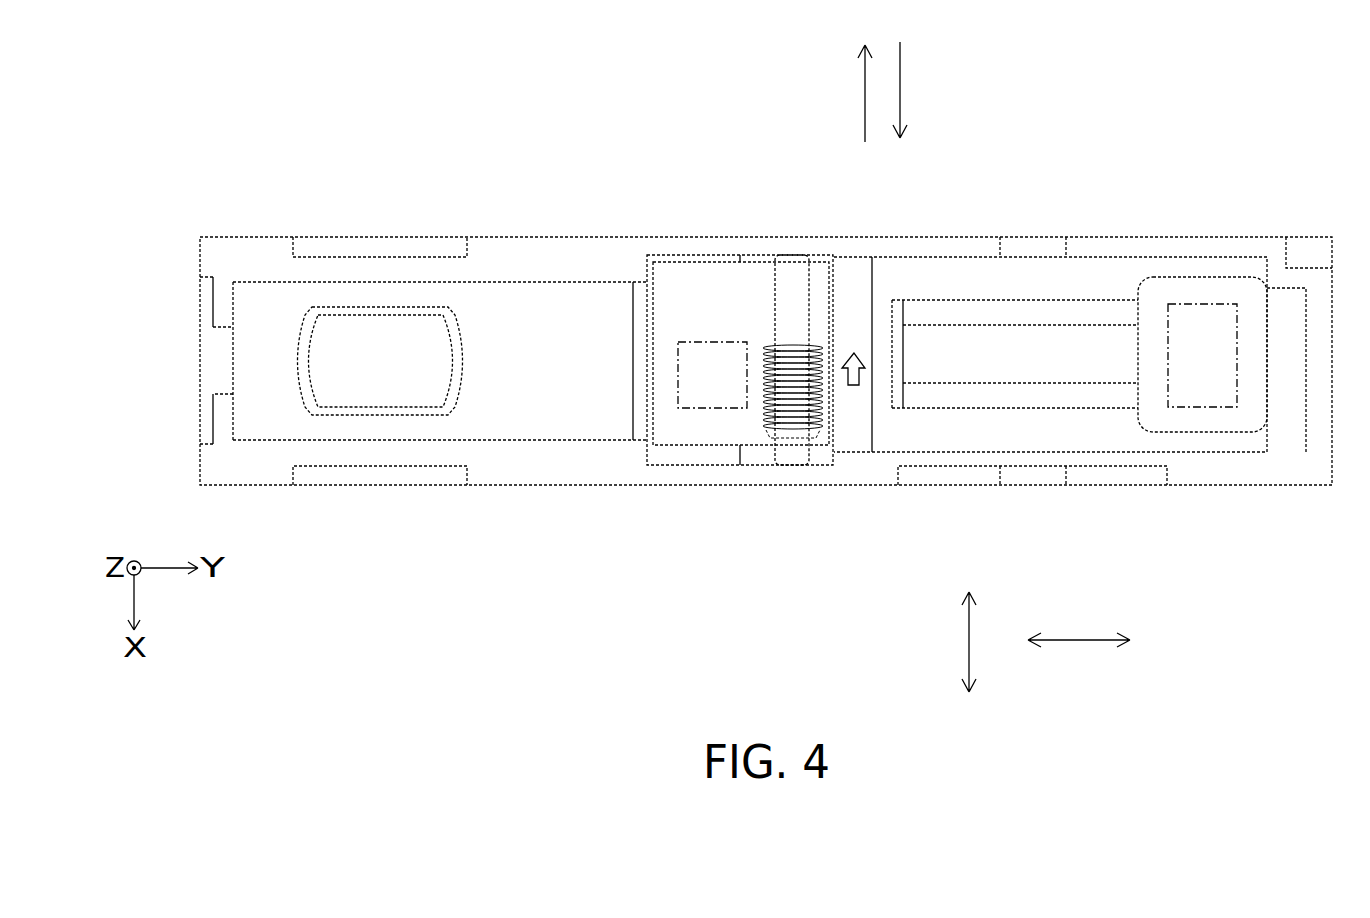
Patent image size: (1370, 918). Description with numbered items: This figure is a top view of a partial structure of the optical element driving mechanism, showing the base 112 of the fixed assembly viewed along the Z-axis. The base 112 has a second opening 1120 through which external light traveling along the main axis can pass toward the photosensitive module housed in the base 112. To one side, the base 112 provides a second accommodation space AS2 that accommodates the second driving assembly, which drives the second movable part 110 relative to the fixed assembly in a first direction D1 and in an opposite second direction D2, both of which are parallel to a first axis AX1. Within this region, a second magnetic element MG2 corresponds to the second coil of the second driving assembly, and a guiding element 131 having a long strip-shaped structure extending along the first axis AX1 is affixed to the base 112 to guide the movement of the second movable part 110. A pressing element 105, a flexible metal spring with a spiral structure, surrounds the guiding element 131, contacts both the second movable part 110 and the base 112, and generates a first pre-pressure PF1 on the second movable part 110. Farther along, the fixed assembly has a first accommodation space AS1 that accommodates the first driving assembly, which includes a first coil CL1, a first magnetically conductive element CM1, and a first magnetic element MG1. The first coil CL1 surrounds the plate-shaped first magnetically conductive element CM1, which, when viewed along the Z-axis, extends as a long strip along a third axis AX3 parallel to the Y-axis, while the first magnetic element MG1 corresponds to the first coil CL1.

The base 112 is at (545, 257).
The second opening 1120 is at (380, 312).
The second movable part 110 is at (687, 282).
The second accommodation space AS2 is at (758, 249).
The guiding element 131 is at (793, 272).
The second magnetic element MG2 is at (713, 395).
The pressing element 105 is at (795, 440).
The first pre-pressure PF1 is at (851, 356).
The first accommodation space AS1 is at (1101, 263).
The first magnetically conductive element CM1 is at (896, 362).
The first coil CL1 is at (1092, 368).
The first magnetic element MG1 is at (1200, 335).
The first direction D1 is at (862, 75).
The second direction D2 is at (899, 109).
The first axis AX1 is at (968, 625).
The third axis AX3 is at (1110, 639).